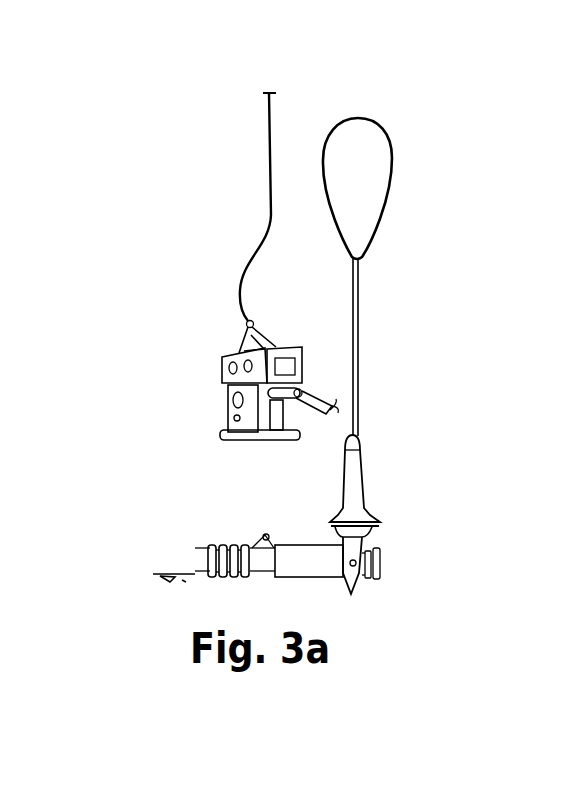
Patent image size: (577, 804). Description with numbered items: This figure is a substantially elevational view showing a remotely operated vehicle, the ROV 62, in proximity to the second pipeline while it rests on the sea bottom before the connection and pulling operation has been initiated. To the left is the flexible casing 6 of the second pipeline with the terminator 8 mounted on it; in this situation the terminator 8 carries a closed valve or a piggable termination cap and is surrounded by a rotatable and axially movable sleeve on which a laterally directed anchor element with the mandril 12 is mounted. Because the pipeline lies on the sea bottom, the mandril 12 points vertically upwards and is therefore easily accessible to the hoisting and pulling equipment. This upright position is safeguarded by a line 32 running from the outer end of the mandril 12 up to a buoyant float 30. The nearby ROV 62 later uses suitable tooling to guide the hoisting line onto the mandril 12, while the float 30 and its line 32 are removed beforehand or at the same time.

The float 30 is at (378, 151).
The line 32 is at (359, 302).
The mandril 12 is at (356, 487).
The terminator 8 is at (298, 557).
The flexible casing 6 is at (229, 547).
The ROV 62 is at (215, 357).